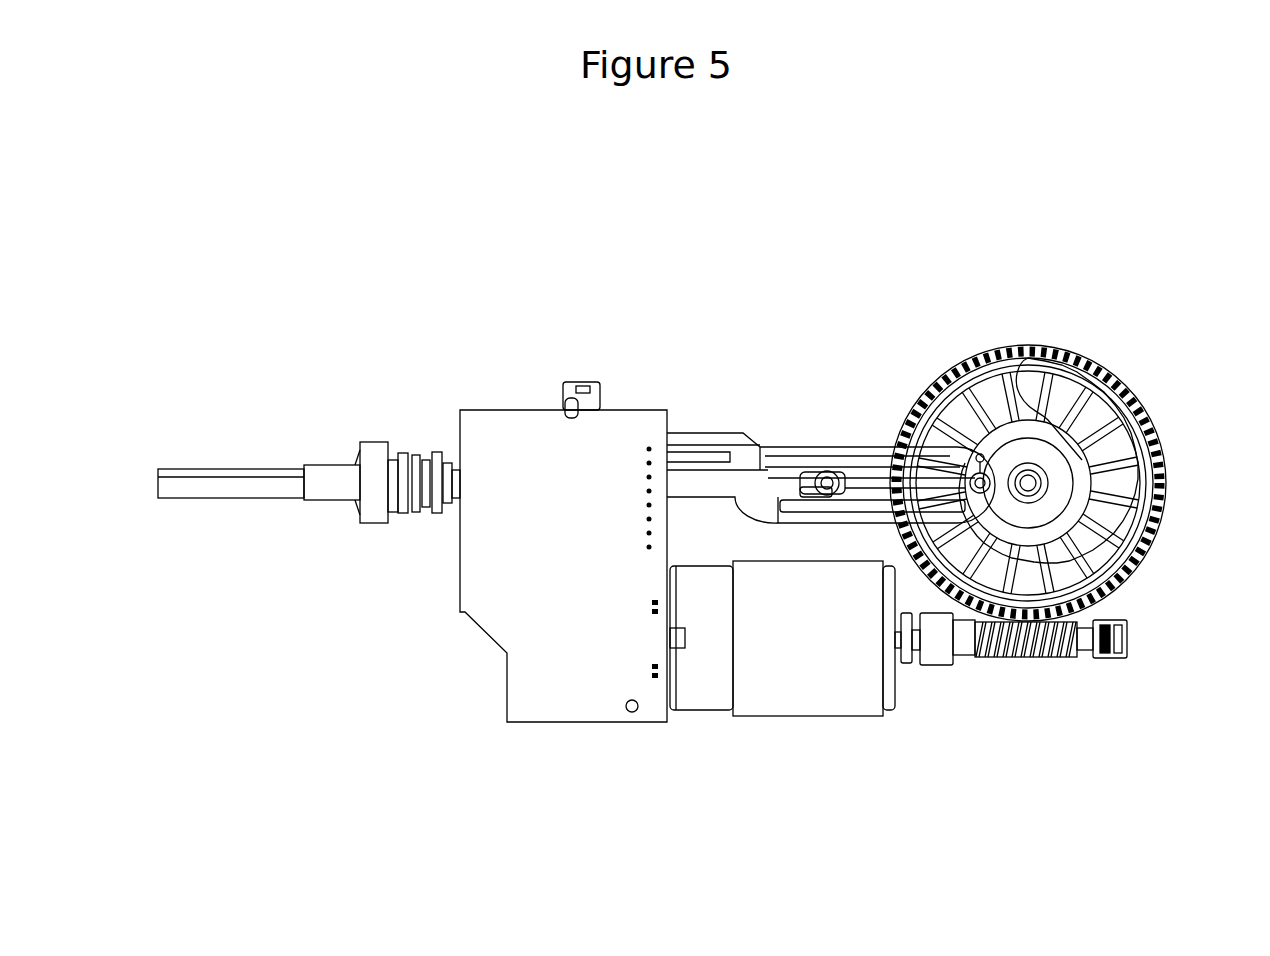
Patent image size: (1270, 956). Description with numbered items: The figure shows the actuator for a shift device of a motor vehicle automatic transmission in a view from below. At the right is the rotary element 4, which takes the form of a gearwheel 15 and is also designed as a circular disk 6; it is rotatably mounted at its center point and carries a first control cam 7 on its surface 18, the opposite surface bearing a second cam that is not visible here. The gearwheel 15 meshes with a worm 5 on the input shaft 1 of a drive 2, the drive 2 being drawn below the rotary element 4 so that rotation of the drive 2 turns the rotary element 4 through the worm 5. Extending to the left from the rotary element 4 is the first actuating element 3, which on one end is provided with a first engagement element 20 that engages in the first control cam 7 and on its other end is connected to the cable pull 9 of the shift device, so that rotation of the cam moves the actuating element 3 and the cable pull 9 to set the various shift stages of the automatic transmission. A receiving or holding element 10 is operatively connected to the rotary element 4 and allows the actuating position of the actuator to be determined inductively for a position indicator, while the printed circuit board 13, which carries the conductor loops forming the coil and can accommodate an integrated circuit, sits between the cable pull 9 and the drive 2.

The input shaft 1 is at (914, 665).
The drive 2 is at (801, 688).
The first actuating element 3 is at (878, 487).
The rotary element 4 is at (1043, 430).
The worm 5 is at (1030, 660).
The circular disk 6 is at (1028, 483).
The first control cam 7 is at (1078, 520).
The cable pull 9 is at (275, 483).
The receiving or holding element 10 is at (747, 462).
The printed circuit board 13 is at (503, 423).
The gearwheel 15 is at (1062, 350).
The surface 18 is at (1135, 452).
The first engagement element 20 is at (978, 478).